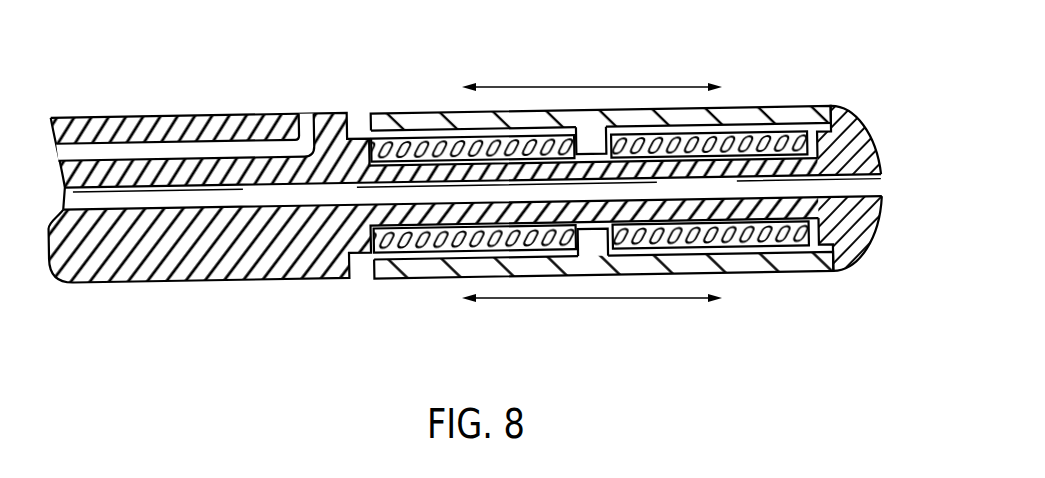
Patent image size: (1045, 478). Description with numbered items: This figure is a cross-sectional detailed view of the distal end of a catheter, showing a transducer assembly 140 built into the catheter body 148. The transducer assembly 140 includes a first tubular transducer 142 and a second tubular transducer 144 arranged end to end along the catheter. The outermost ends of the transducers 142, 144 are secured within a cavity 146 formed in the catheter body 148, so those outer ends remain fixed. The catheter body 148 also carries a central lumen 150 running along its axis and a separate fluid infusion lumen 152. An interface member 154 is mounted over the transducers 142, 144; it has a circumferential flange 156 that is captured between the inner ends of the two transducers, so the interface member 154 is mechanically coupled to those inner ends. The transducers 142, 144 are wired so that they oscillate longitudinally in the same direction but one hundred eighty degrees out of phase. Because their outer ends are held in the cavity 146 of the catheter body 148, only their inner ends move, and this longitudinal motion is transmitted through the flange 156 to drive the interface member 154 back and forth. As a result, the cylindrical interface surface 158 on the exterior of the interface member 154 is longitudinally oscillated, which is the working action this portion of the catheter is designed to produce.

The transducer assembly 140 is at (818, 44).
The first tubular transducer 142 is at (395, 246).
The second tubular transducer 144 is at (798, 240).
The cavity 146 is at (868, 140).
The catheter body 148 is at (148, 268).
The central lumen 150 is at (281, 201).
The fluid infusion lumen 152 is at (201, 143).
The interface member 154 is at (433, 272).
The circumferential flange 156 is at (592, 132).
The cylindrical interface surface 158 is at (412, 114).